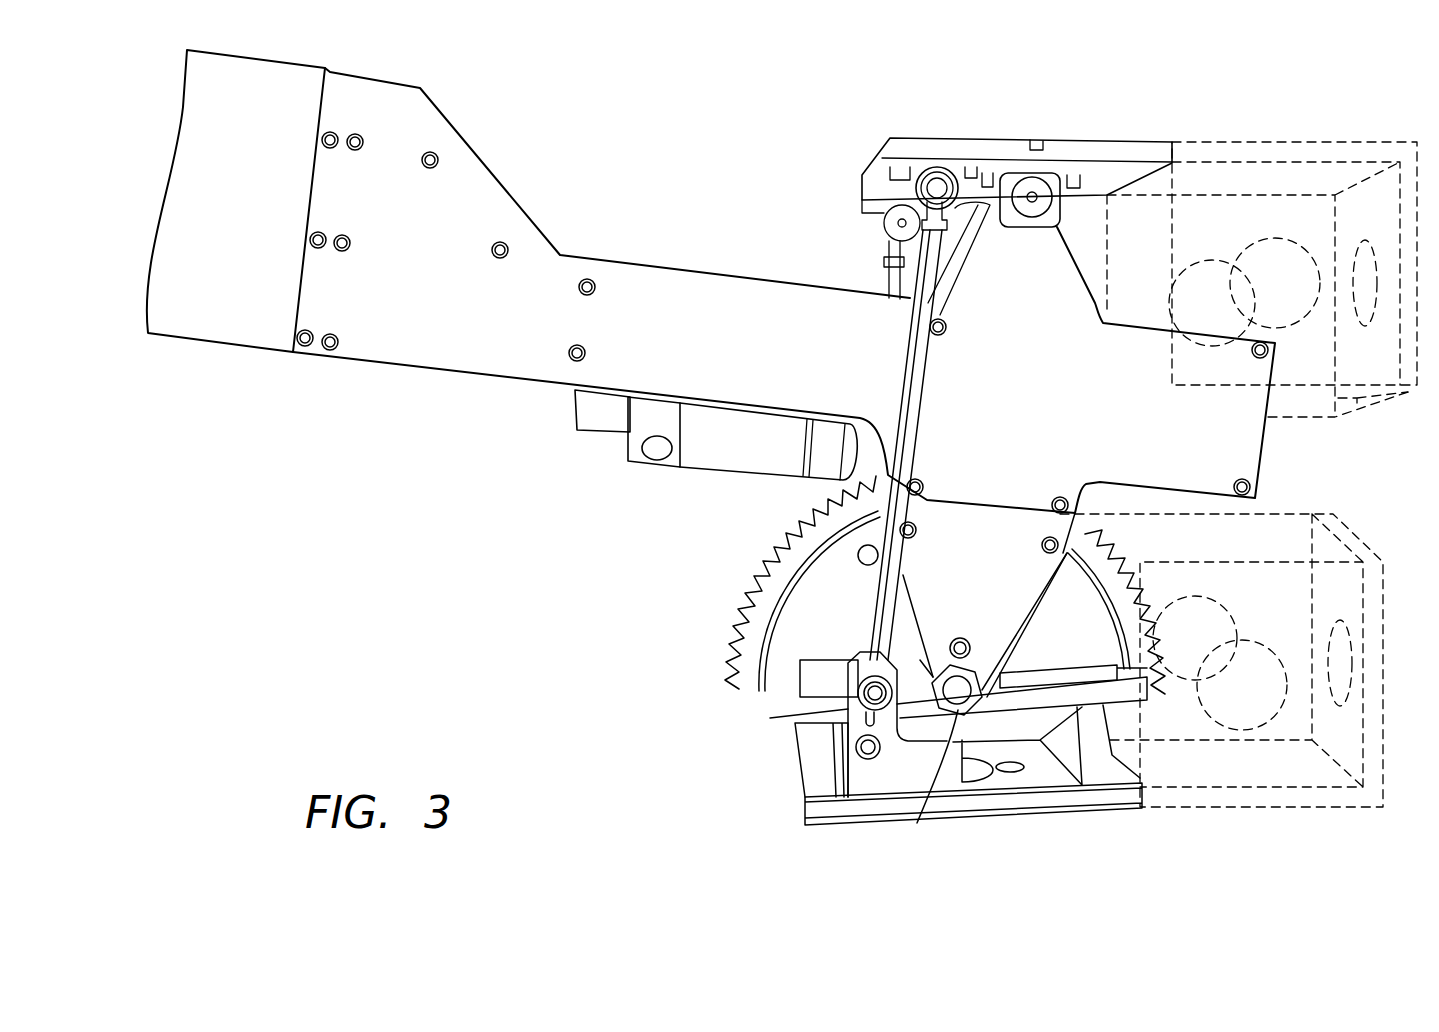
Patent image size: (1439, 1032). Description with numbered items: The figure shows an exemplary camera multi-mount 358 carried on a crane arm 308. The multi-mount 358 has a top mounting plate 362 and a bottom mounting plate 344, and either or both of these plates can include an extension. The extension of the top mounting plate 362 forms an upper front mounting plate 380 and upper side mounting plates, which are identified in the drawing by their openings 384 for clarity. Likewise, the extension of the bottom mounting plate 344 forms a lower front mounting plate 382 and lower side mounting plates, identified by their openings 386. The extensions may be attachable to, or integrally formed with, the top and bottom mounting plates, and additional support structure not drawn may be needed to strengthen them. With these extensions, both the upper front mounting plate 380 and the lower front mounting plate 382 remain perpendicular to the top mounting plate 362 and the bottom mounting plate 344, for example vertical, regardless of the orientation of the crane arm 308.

The crane arm 308 is at (258, 325).
The camera multi-mount 358 is at (632, 208).
The top mounting plate 362 is at (1117, 142).
The openings 384 is at (1282, 237).
The upper front mounting plate 380 is at (1323, 403).
The bottom mounting plate 344 is at (1043, 813).
The openings 386 is at (1250, 728).
The lower front mounting plate 382 is at (1337, 757).